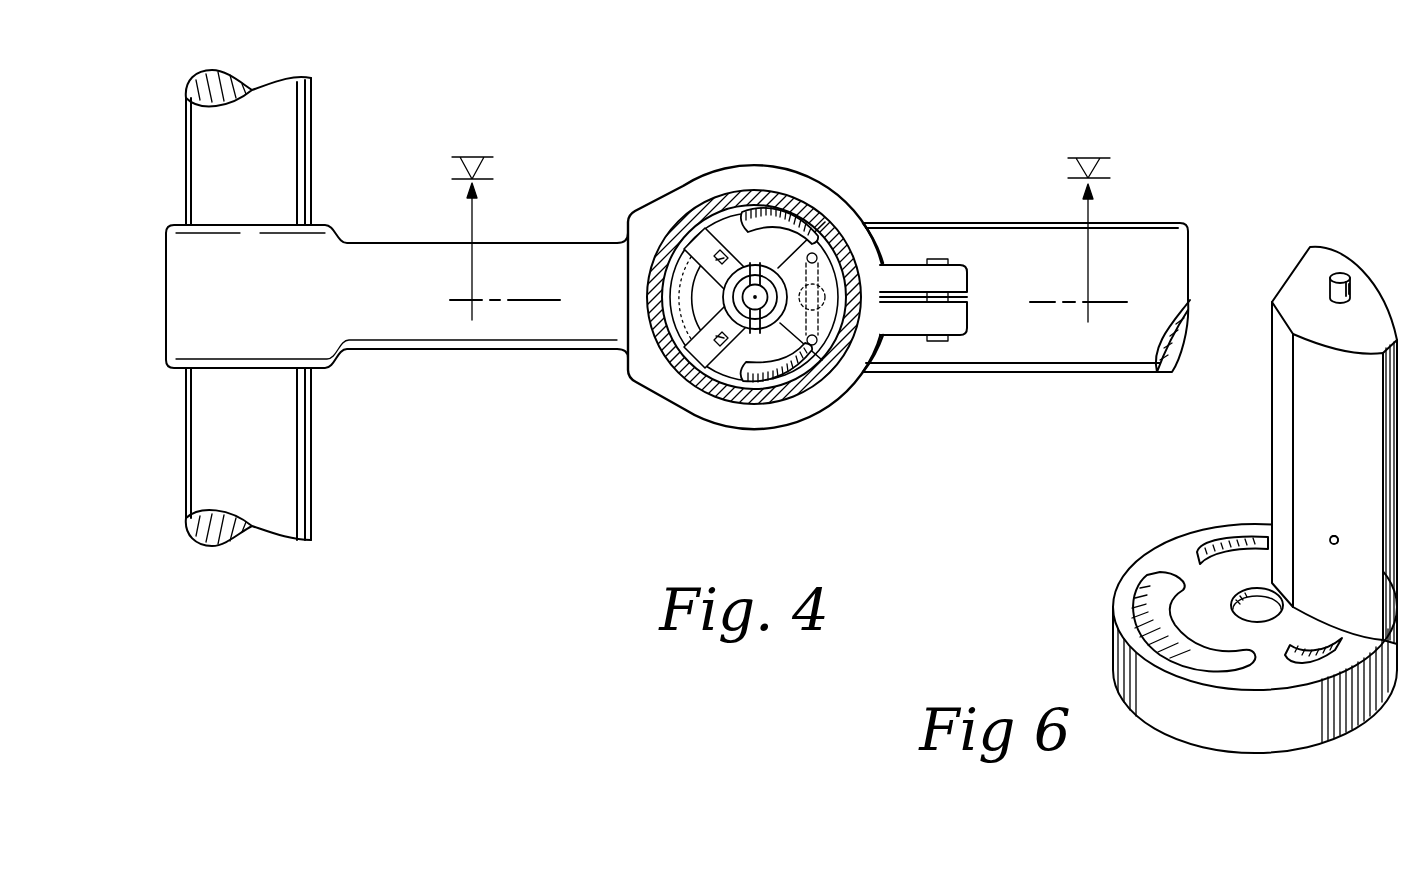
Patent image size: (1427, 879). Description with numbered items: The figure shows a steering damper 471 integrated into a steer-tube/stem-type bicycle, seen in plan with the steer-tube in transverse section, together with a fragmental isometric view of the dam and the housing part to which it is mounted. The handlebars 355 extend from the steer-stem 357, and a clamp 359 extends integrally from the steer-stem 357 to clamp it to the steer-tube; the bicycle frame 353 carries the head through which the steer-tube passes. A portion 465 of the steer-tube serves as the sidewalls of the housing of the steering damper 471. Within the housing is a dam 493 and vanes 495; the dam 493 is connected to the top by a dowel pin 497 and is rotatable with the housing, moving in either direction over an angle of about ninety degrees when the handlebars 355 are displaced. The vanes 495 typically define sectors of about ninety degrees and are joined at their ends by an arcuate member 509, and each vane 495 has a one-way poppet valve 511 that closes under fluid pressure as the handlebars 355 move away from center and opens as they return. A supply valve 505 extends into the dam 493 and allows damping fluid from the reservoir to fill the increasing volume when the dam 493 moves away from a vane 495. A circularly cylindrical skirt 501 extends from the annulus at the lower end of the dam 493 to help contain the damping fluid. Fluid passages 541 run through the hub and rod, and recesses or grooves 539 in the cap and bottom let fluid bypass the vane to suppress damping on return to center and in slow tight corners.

In FIG. 4, the handlebars 355 is at (187, 146).
In FIG. 4, the steer-stem 357 is at (438, 348).
In FIG. 4, the frame 353 is at (1153, 230).
In FIG. 4, the clamp 359 is at (877, 330).
In FIG. 4, the dam 493 is at (885, 263).
In FIG. 6, the dam 493 is at (1321, 430).
In FIG. 4, the supply valve 505 is at (820, 258).
In FIG. 6, the supply valve 505 is at (1331, 540).
In FIG. 4, the steering damper 471 is at (828, 206).
In FIG. 4, the fluid passages 541 is at (781, 265).
In FIG. 4, the vanes 495 is at (740, 218).
In FIG. 4, the one-way poppet valve 511 is at (692, 244).
In FIG. 4, the arcuate member 509 is at (668, 348).
In FIG. 4, the portion of the steer-tube 465 is at (833, 403).
In FIG. 6, the dowel pin 497 is at (1352, 290).
In FIG. 6, the recesses or grooves 539 is at (1152, 600).
In FIG. 6, the cylindrical skirt 501 is at (1175, 730).